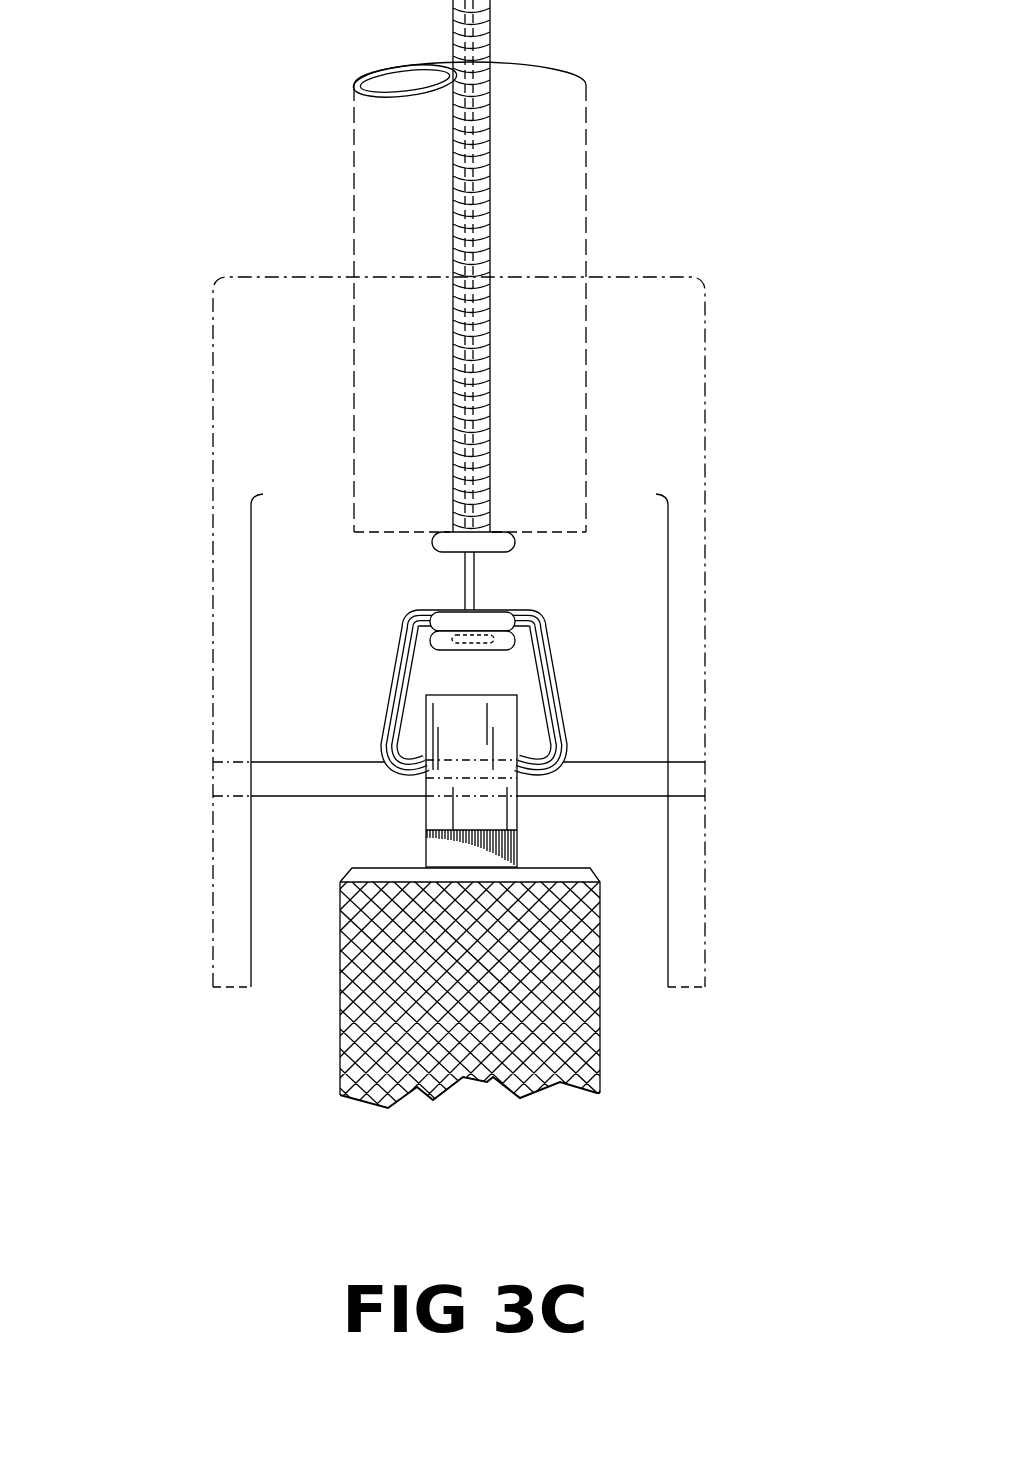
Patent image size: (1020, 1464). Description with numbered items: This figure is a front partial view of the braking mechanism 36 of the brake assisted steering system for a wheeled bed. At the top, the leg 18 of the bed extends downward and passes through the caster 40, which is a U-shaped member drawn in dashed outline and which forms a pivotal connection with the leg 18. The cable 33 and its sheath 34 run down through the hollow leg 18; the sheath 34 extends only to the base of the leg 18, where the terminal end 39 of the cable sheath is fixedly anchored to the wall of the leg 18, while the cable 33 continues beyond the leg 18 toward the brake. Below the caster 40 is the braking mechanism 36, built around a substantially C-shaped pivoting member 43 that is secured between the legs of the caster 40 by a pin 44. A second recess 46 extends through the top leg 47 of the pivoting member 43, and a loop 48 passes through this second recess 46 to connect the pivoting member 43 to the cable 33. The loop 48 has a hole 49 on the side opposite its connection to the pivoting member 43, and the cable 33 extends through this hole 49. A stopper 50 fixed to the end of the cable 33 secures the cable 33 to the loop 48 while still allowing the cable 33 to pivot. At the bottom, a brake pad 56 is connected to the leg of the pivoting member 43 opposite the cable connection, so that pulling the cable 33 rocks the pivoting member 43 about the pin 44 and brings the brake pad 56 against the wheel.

The leg 18 is at (582, 143).
The cable 33 is at (470, 580).
The sheath 34 is at (482, 43).
The braking mechanism 36 is at (638, 1036).
The terminal end of the cable sheath 39 is at (515, 538).
The caster 40 is at (690, 367).
The pivoting member 43 is at (513, 798).
The pin 44 is at (640, 788).
The second recess 46 is at (518, 778).
The top leg 47 is at (436, 711).
The loop 48 is at (545, 671).
The hole 49 is at (467, 620).
The stopper 50 is at (433, 640).
The brake pad 56 is at (582, 1063).